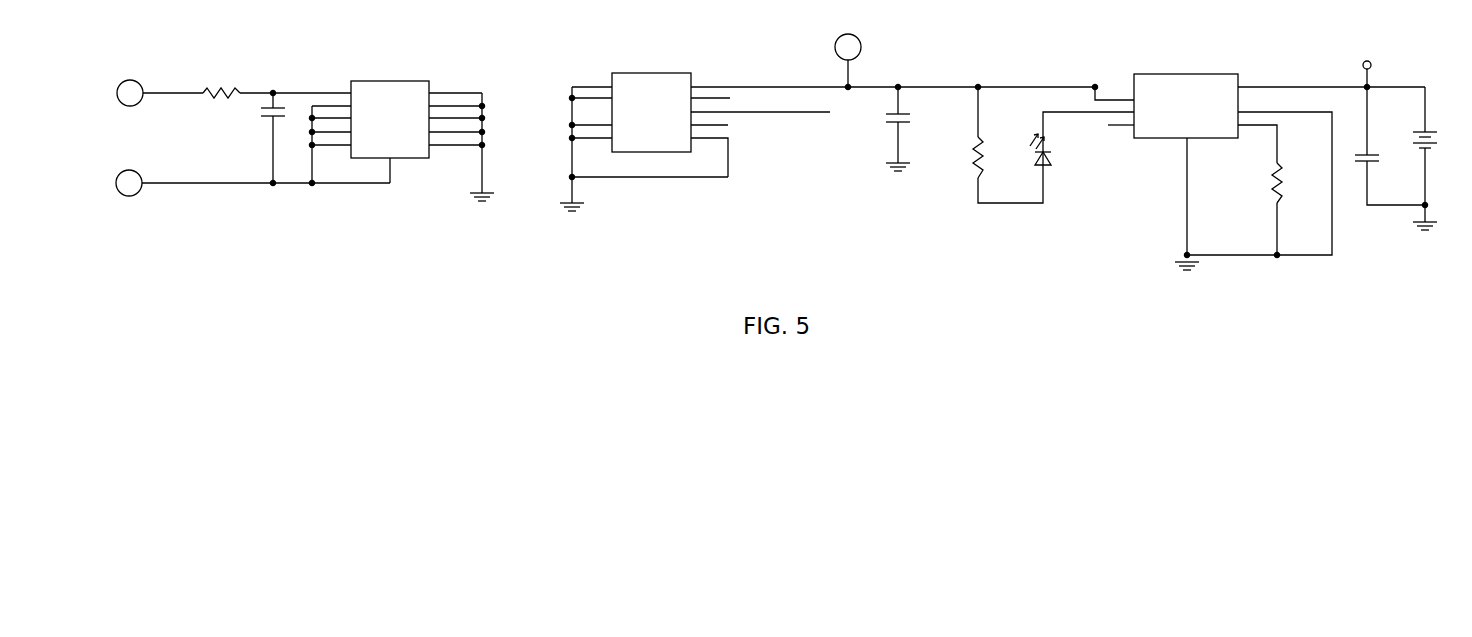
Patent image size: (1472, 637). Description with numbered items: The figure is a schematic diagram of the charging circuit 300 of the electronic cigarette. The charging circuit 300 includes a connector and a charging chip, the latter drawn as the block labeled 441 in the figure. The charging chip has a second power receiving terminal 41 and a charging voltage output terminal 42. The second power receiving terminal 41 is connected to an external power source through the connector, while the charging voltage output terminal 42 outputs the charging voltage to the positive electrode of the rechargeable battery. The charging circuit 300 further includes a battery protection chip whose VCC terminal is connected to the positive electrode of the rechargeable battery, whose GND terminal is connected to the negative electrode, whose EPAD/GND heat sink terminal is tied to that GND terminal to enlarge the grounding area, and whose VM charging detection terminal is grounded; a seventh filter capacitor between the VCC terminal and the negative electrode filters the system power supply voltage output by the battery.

The charging circuit 300 is at (661, 33).
The charging chip 441 is at (1196, 144).
The second power receiving terminal 41 is at (1113, 92).
The charging voltage output terminal 42 is at (1269, 81).